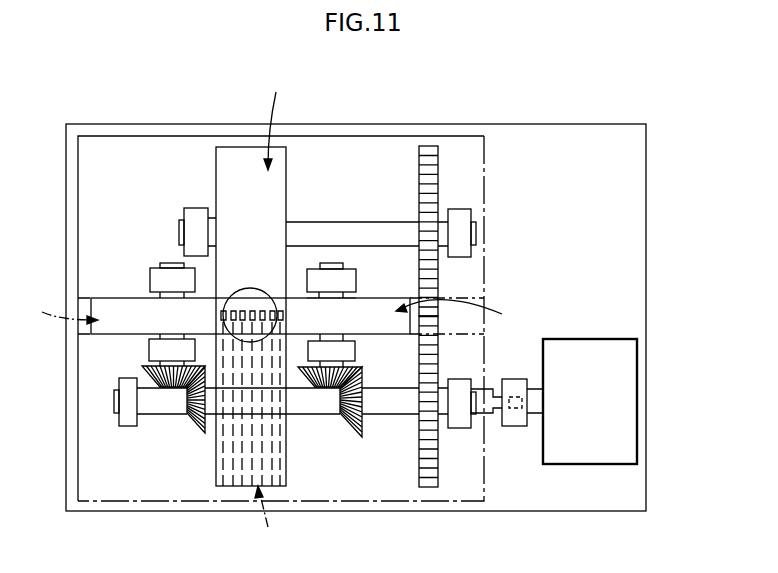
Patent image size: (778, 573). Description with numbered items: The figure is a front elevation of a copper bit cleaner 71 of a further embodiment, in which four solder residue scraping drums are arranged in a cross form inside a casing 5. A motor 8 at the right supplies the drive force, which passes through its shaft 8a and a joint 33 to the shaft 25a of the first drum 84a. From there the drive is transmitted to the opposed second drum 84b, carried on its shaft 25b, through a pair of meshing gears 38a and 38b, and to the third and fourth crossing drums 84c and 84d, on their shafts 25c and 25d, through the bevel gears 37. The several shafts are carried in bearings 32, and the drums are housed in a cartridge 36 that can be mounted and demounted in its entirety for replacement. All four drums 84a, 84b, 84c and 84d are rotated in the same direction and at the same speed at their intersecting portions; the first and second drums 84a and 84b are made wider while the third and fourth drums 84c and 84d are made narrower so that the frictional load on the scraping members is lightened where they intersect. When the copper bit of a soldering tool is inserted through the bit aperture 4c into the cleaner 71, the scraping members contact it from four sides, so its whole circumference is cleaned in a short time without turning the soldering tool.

The casing 5 is at (646, 198).
The motor 8 is at (627, 393).
The motor shaft 8a is at (535, 428).
The bit aperture 4c is at (259, 288).
The shaft of the first drum 25a is at (401, 414).
The shaft of the second drum 25b is at (336, 222).
The shaft of the third drum 25c is at (346, 297).
The shaft of the fourth drum 25d is at (150, 297).
The bearings 32 is at (196, 208).
The joint 33 is at (516, 379).
The cartridge 36 is at (182, 146).
The bevel gears 37 is at (142, 370).
The gear 38a is at (438, 351).
The gear 38b is at (419, 158).
The copper bit cleaner 71 is at (566, 104).
The first drum 84a is at (275, 517).
The second drum 84b is at (284, 118).
The third drum 84c is at (467, 314).
The fourth drum 84d is at (50, 312).